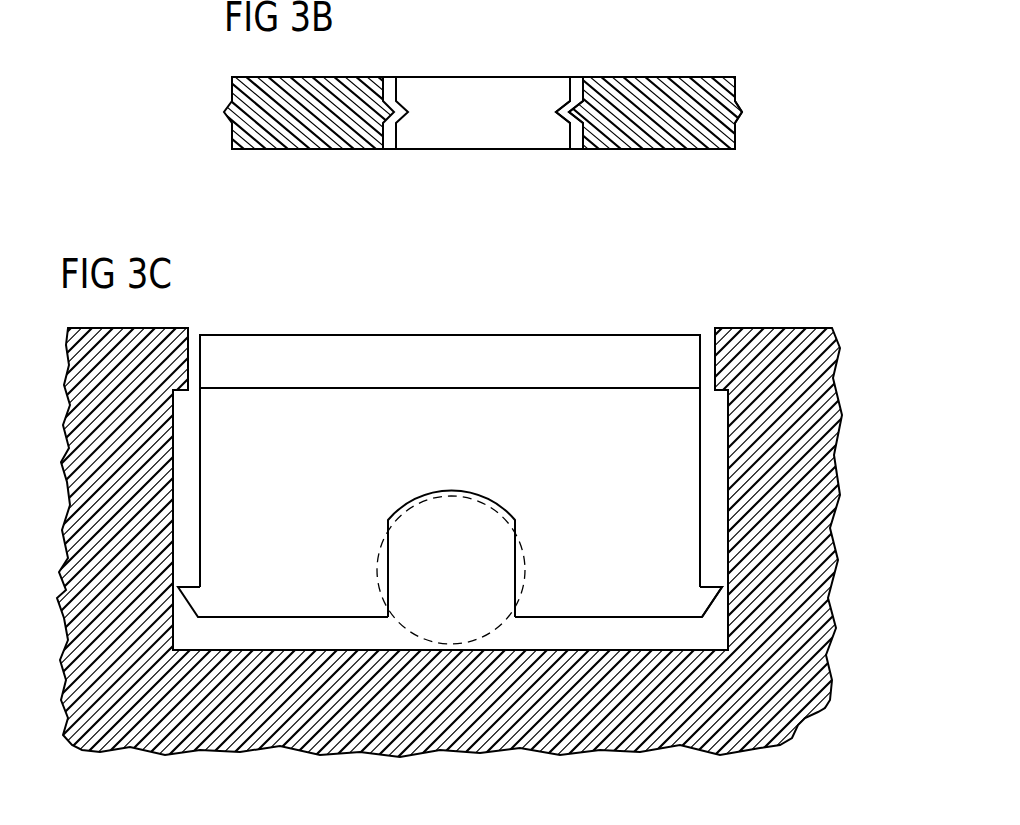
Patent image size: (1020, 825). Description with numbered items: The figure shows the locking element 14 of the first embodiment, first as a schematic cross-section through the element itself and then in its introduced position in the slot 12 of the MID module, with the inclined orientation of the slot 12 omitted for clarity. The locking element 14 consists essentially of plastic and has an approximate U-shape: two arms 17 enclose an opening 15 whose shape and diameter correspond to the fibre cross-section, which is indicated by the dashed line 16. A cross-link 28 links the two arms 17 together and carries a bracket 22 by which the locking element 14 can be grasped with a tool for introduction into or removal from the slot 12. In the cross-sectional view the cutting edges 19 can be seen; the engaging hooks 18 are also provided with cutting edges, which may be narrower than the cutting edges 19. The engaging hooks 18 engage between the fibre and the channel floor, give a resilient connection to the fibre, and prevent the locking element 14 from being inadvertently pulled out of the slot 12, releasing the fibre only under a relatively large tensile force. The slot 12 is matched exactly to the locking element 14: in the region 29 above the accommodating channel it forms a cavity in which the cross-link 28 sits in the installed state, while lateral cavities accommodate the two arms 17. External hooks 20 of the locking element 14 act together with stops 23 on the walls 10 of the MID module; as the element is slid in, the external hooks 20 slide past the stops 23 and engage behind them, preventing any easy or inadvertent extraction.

In FIG. 3C, the walls 10 is at (733, 740).
In FIG. 3C, the slot 12 is at (712, 420).
In FIG. 3B, the locking element 14 is at (677, 82).
In FIG. 3B, the opening 15 is at (480, 92).
In FIG. 3C, the opening 15 is at (432, 507).
In FIG. 3C, the dashed line 16 is at (488, 633).
In FIG. 3C, the arms 17 is at (258, 600).
In FIG. 3B, the engaging hooks 18 is at (555, 111).
In FIG. 3C, the engaging hooks 18 is at (386, 614).
In FIG. 3B, the cutting edges 19 is at (576, 113).
In FIG. 3C, the cutting edges 19 is at (382, 571).
In FIG. 3B, the external hooks 20 is at (742, 111).
In FIG. 3C, the external hooks 20 is at (698, 600).
In FIG. 3C, the bracket 22 is at (549, 350).
In FIG. 3C, the stops 23 is at (181, 357).
In FIG. 3C, the cross-link 28 is at (452, 402).
In FIG. 3C, the region 29 is at (190, 432).